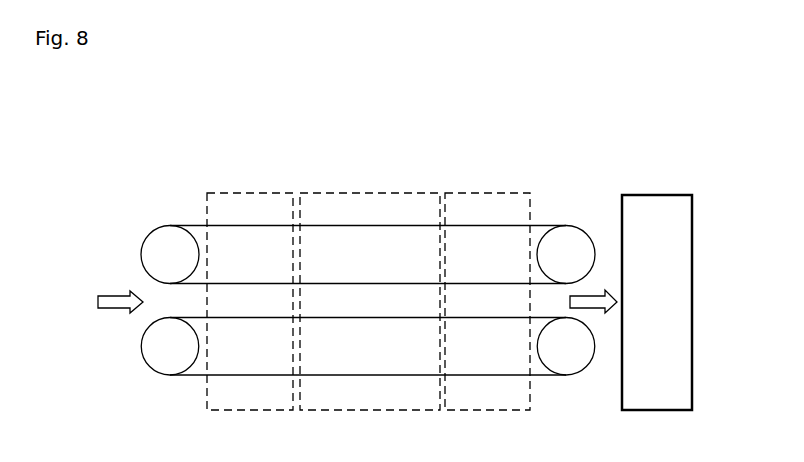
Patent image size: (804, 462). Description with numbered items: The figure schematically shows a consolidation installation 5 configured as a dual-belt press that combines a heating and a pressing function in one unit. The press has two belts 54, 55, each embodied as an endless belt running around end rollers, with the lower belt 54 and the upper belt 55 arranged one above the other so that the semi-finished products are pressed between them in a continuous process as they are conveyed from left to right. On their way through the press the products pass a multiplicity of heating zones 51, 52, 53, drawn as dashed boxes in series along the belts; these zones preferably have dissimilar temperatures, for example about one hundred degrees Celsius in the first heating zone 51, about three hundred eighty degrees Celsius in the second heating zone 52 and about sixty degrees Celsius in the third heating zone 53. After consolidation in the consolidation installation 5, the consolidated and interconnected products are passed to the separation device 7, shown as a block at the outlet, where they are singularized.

The consolidation installation 5 is at (107, 172).
The first heating zone 51 is at (242, 192).
The second heating zone 52 is at (362, 192).
The third heating zone 53 is at (475, 192).
The belt 54 is at (190, 375).
The belt 55 is at (542, 220).
The separation device 7 is at (653, 210).